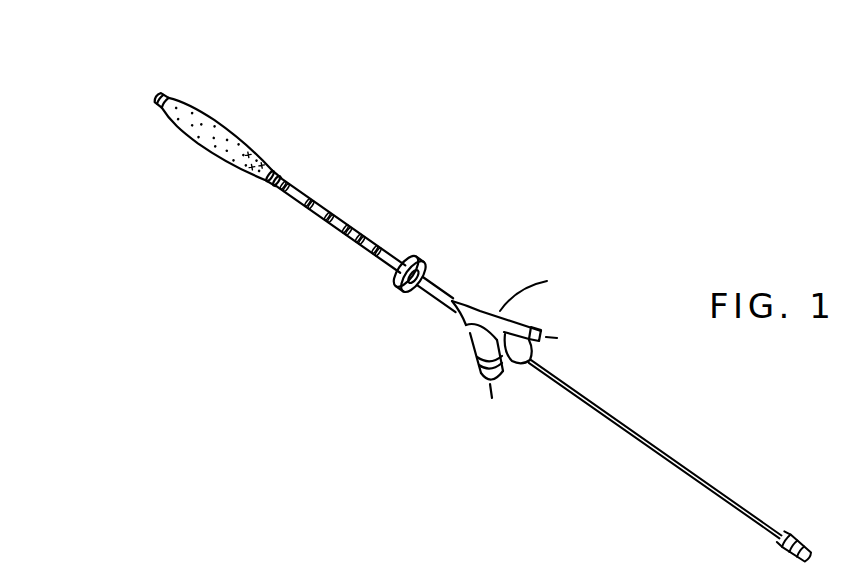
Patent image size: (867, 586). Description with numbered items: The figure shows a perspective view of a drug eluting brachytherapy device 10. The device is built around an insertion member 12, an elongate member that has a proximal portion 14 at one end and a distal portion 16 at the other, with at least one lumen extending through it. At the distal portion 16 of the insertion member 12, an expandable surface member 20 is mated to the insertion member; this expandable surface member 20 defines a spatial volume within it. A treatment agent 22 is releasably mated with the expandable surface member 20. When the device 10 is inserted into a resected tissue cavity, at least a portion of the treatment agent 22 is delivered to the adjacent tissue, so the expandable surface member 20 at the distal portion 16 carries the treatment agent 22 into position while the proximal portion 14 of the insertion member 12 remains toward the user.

The drug eluting brachytherapy device 10 is at (419, 293).
The insertion member 12 is at (333, 228).
The proximal portion 14 is at (479, 460).
The distal portion 16 is at (164, 109).
The expandable surface member 20 is at (235, 136).
The treatment agent 22 is at (192, 117).